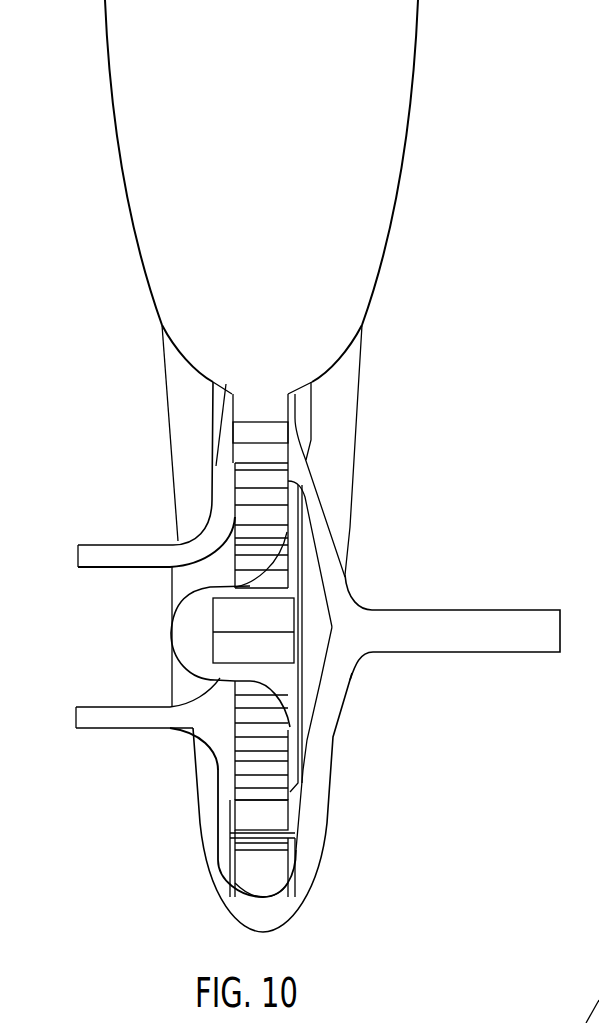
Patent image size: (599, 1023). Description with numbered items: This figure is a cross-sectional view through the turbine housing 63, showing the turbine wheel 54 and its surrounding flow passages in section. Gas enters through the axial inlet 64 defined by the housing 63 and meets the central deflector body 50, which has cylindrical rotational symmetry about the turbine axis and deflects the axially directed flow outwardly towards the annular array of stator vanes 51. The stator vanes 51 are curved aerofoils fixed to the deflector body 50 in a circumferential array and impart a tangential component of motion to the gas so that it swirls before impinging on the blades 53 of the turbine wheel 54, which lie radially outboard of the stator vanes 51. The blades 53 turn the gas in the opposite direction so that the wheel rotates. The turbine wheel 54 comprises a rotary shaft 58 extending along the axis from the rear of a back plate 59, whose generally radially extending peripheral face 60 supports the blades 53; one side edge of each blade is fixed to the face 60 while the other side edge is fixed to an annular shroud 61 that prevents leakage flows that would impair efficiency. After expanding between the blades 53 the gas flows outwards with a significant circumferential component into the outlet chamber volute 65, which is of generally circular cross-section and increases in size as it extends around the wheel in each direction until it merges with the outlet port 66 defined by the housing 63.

The central deflector body 50 is at (195, 641).
The stator vanes 51 is at (240, 548).
The blades 53 is at (280, 817).
The turbine wheel 54 is at (366, 671).
The rotary shaft 58 is at (512, 628).
The back plate 59 is at (327, 549).
The peripheral face 60 is at (289, 427).
The annular shroud 61 is at (233, 424).
The housing 63 is at (590, 1008).
The axial inlet 64 is at (78, 546).
The outlet chamber volute 65 is at (197, 467).
The outlet port 66 is at (418, 2).